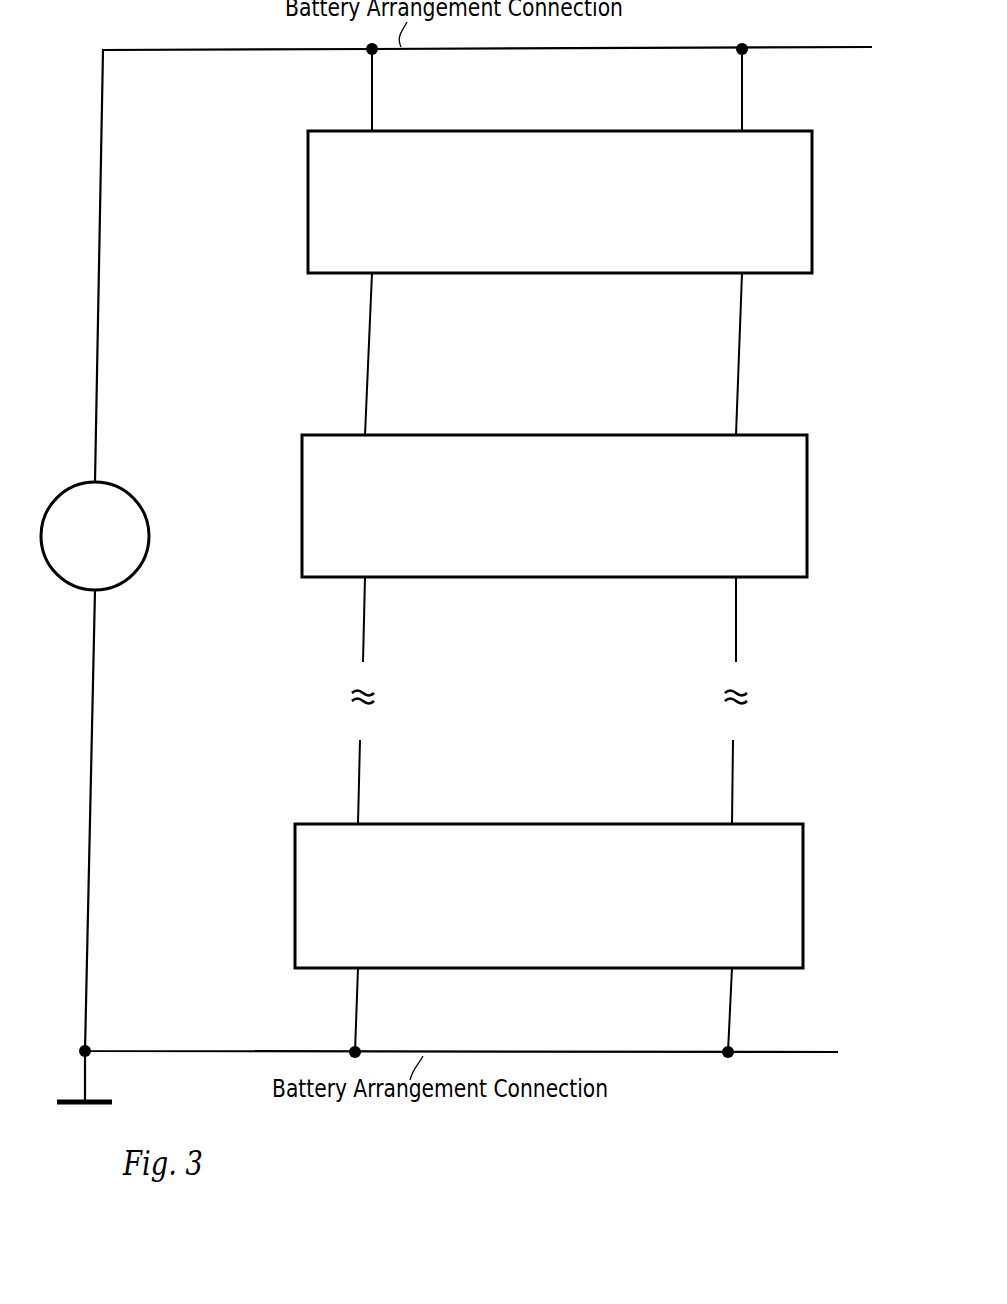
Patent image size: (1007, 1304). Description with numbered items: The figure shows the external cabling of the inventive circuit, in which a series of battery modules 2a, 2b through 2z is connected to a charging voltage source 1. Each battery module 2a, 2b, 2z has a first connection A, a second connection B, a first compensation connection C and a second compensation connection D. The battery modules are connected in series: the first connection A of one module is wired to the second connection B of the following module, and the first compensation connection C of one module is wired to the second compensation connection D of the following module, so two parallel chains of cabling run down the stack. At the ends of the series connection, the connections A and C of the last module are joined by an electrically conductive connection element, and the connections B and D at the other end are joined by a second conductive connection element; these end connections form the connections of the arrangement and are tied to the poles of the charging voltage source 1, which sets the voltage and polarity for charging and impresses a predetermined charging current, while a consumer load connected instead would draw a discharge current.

The charging voltage source 1 is at (95, 536).
The battery module 2a is at (560, 202).
The battery module 2b is at (554, 506).
The battery arrangement 2z is at (549, 896).